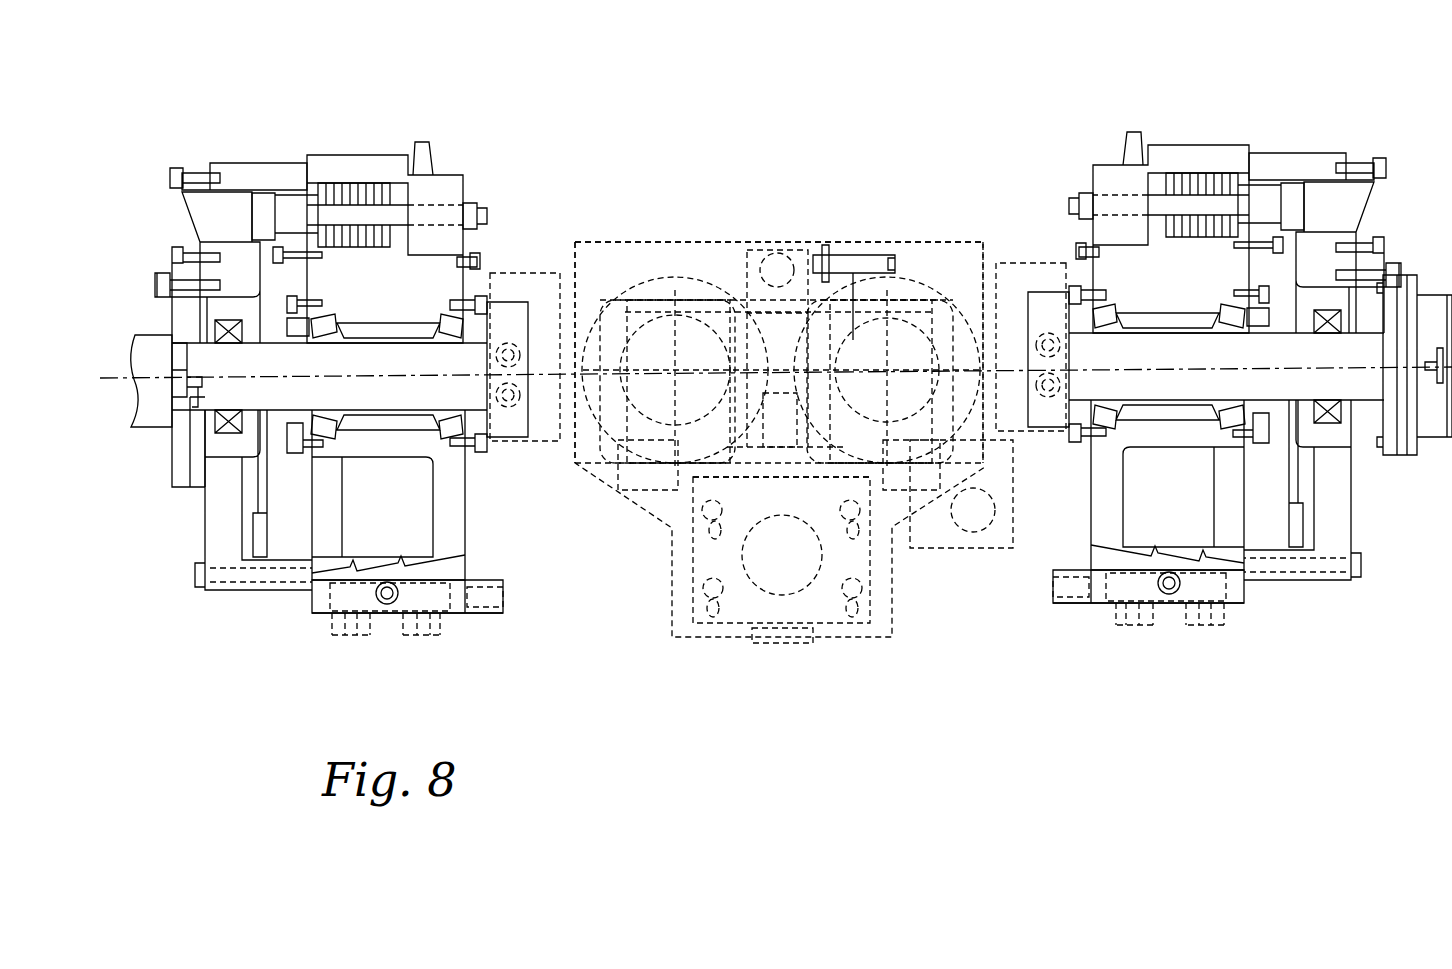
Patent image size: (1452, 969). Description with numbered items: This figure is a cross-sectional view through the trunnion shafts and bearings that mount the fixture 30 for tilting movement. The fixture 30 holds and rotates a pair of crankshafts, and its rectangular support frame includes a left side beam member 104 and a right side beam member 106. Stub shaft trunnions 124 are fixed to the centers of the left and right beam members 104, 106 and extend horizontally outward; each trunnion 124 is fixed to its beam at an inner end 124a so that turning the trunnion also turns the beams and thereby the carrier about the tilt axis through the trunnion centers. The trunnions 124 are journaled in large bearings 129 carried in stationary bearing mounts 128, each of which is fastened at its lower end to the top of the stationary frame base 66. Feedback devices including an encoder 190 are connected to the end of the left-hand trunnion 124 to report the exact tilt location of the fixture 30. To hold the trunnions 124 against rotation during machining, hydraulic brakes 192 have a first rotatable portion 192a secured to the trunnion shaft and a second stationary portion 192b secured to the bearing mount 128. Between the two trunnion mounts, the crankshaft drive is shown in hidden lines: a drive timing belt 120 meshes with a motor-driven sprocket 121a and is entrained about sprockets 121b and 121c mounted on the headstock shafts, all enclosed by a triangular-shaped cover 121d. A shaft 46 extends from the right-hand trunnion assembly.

The fixture 30 is at (795, 215).
The drive shaft 46 is at (1233, 367).
The frame base 66 is at (515, 620).
The left side beam member 104 is at (555, 320).
The right side beam member 106 is at (1017, 350).
The drive timing belt 120 is at (730, 540).
The sprocket 121a is at (755, 587).
The sprocket 121b is at (640, 333).
The sprocket 121c is at (853, 273).
The triangular-shaped cover 121d is at (918, 240).
The stub shaft trunnion 124 is at (385, 398).
The inner end of trunnion 124a is at (478, 385).
The bearing mount 128 is at (478, 545).
The large bearing 129 is at (433, 317).
The encoder 190 is at (150, 347).
The hydraulic brake 192 is at (335, 165).
The first rotatable portion 192a is at (270, 283).
The second stationary portion 192b is at (335, 105).